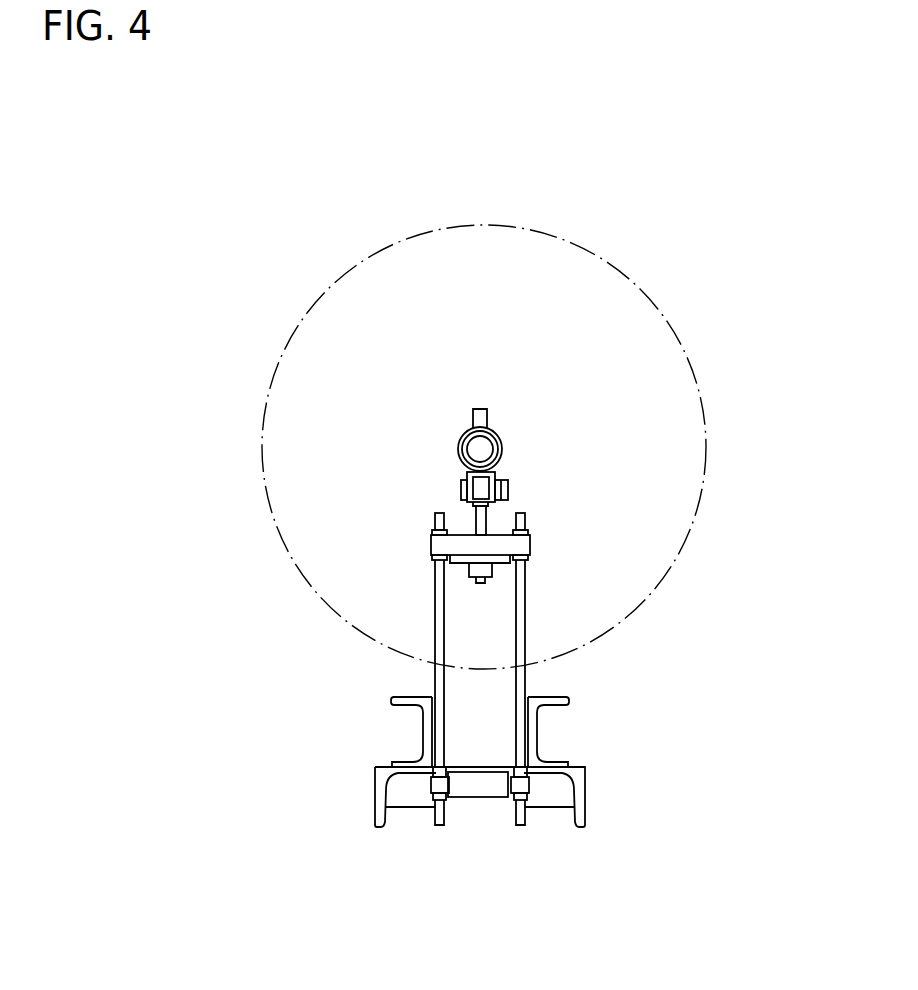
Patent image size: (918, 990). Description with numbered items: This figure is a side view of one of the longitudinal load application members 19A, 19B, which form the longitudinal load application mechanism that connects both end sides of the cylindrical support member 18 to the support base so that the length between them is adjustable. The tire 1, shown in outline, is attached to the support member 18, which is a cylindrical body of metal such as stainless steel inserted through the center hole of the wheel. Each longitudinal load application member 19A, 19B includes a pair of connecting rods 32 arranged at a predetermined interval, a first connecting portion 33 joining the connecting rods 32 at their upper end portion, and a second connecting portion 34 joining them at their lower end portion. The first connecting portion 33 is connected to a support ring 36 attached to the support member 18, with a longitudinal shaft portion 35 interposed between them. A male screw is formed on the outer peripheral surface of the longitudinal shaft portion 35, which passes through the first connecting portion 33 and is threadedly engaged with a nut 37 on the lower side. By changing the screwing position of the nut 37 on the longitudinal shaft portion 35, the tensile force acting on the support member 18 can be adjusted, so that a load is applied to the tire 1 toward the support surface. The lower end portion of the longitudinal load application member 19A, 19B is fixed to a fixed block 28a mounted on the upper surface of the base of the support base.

The tire 1 is at (310, 307).
The support member 18 is at (459, 447).
The support ring 36 is at (503, 462).
The longitudinal shaft portion 35 is at (487, 521).
The first connecting portion 33 is at (457, 545).
The nut 37 is at (491, 569).
The connecting rods 32 is at (435, 615).
The fixed block 28a is at (391, 698).
The longitudinal load application member 19A is at (589, 754).
The longitudinal load application member 19B is at (480, 797).
The second connecting portion 34 is at (476, 791).